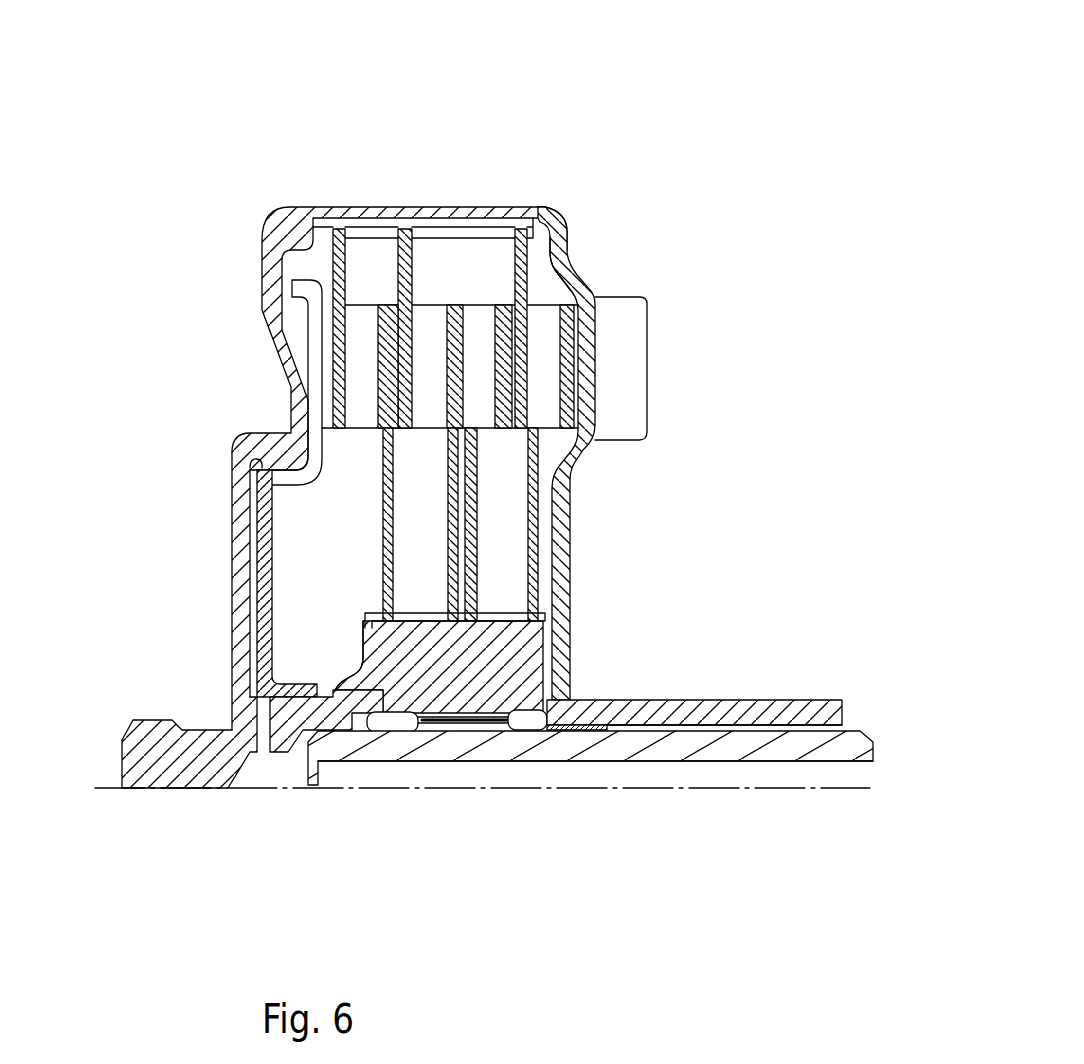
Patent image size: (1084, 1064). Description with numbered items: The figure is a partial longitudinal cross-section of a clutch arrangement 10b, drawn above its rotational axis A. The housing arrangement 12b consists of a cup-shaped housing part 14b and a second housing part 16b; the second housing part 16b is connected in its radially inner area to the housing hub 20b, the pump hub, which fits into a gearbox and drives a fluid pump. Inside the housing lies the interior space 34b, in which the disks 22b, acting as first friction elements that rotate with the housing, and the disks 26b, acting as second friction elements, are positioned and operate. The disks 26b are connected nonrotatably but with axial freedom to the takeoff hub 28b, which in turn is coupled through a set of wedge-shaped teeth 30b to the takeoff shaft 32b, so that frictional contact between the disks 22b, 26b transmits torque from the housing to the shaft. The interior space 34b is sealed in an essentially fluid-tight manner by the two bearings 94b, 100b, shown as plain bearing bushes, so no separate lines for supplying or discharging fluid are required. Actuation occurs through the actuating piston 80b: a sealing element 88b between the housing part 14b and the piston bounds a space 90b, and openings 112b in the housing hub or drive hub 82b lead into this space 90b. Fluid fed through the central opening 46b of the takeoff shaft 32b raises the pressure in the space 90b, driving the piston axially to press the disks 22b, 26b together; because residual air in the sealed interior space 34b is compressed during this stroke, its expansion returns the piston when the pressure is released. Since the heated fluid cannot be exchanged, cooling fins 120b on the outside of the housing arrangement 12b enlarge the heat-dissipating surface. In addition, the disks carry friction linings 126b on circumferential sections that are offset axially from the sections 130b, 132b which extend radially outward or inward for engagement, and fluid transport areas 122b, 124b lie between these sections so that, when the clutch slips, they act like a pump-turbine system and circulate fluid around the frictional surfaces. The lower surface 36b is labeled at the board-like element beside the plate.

The clutch arrangement 10b is at (302, 86).
The housing arrangement 12b is at (425, 318).
The housing part 14b is at (262, 267).
The second housing part 16b is at (578, 457).
The housing hub 20b is at (693, 708).
The disks 22b is at (567, 226).
The disks 26b is at (532, 507).
The takeoff hub 28b is at (423, 680).
The set of wedge-shaped teeth 30b is at (453, 727).
The takeoff shaft 32b is at (532, 748).
The interior space 34b is at (545, 288).
The board lower surface 36b is at (776, 727).
The central opening 46b is at (633, 775).
The actuating piston 80b is at (250, 531).
The housing hub 82b is at (163, 777).
The sealing element 88b is at (255, 460).
The space 90b is at (262, 605).
The bearing 94b is at (577, 715).
The bearing 100b is at (355, 668).
The openings 112b is at (262, 748).
The cooling fins 120b is at (635, 345).
The fluid transport areas 122b is at (452, 305).
The fluid transport areas 124b is at (532, 333).
The friction linings 126b is at (377, 300).
The sections 130b is at (330, 272).
The sections 132b is at (383, 517).
The axis A is at (756, 790).